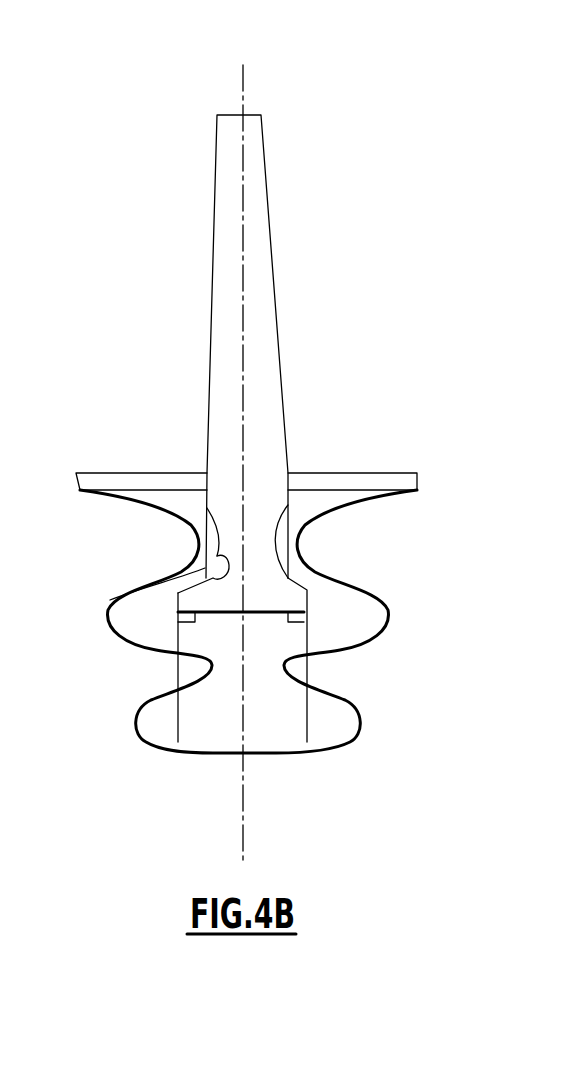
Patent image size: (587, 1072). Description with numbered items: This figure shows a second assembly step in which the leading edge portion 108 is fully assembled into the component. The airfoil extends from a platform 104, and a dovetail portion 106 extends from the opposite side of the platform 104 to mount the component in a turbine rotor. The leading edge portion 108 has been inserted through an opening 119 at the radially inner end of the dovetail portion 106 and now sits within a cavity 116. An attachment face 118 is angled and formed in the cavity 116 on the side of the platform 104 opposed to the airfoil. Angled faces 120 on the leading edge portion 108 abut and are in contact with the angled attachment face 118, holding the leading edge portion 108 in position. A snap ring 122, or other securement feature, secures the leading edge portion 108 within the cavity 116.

The platform 104 is at (118, 473).
The dovetail portion 106 is at (125, 612).
The leading edge portion 108 is at (228, 242).
The cavity 116 is at (292, 530).
The attachment face 118 is at (182, 600).
The opening 119 is at (182, 728).
The angled faces 120 is at (228, 564).
The snap ring 122 is at (188, 622).